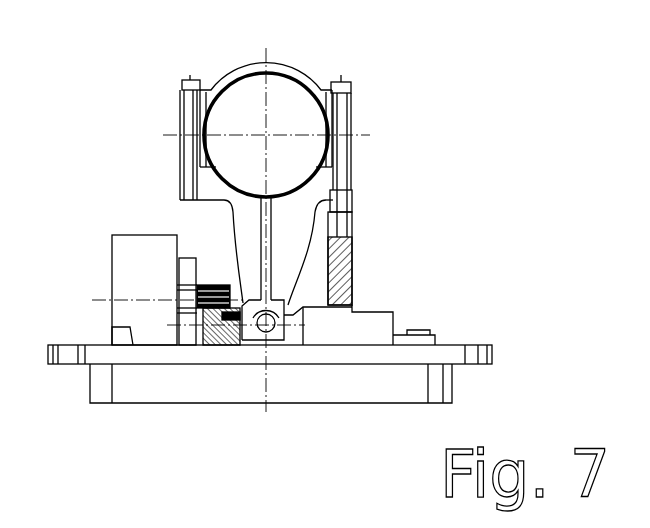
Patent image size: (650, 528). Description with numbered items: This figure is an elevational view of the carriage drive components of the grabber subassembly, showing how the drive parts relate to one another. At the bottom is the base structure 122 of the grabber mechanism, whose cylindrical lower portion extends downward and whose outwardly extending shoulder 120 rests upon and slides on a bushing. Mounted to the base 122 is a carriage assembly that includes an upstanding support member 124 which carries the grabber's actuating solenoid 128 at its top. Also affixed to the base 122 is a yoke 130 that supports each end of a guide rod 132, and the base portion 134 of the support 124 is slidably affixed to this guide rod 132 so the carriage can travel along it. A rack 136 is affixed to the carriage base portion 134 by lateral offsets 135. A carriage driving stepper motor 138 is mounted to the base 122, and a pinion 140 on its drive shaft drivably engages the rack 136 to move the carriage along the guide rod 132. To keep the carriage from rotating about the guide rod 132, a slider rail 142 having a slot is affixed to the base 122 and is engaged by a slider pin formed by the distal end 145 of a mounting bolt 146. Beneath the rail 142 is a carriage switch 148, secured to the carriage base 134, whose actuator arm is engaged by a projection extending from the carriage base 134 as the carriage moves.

The shoulder 120 is at (78, 367).
The base structure 122 is at (452, 378).
The upstanding support member 124 is at (287, 262).
The actuating solenoid 128 is at (288, 73).
The yoke 130 is at (323, 330).
The guide rod 132 is at (266, 333).
The base portion 134 is at (278, 312).
The lateral offsets 135 is at (228, 330).
The rack 136 is at (216, 333).
The carriage driving stepper motor 138 is at (120, 282).
The pinion 140 is at (215, 287).
The slider rail 142 is at (353, 248).
The distal end 145 is at (350, 222).
The mounting bolt 146 is at (350, 88).
The carriage switch 148 is at (397, 320).